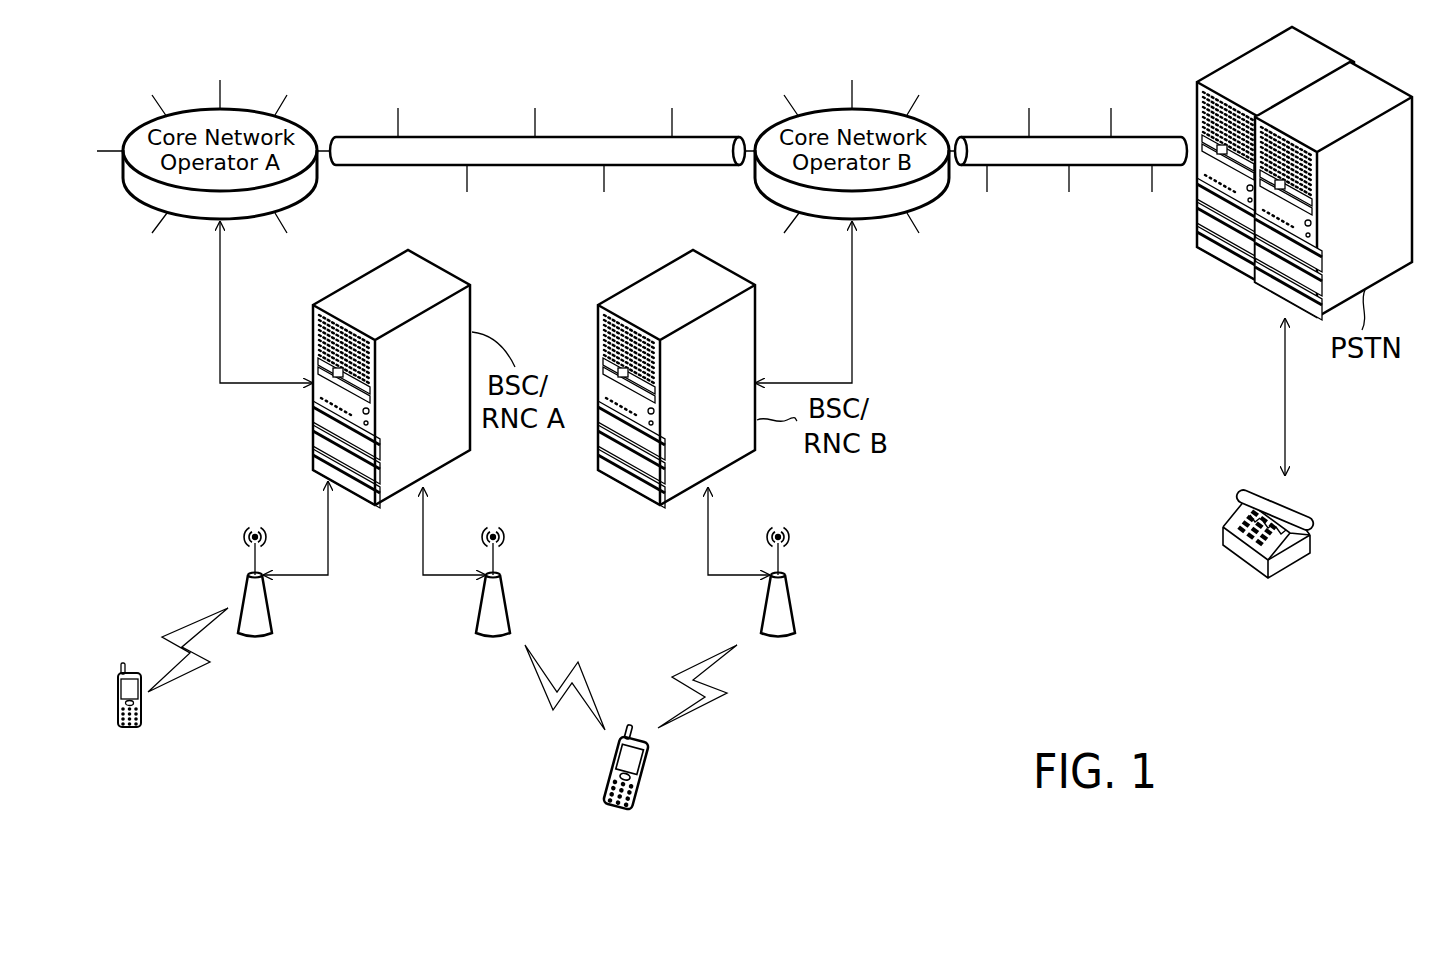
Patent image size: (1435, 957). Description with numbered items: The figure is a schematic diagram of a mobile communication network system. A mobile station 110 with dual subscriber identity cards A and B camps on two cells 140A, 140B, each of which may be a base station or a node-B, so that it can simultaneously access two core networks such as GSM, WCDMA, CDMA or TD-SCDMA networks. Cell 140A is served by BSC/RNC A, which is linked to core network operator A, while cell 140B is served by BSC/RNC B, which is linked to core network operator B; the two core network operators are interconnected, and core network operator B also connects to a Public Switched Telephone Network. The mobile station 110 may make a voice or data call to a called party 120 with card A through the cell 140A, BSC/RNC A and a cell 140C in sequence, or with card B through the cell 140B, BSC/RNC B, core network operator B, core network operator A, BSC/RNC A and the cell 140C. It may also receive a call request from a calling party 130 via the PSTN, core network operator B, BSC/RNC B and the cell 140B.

The mobile station 110 is at (648, 773).
The called party 120 is at (142, 714).
The called party 130 is at (1313, 540).
The cell 140A is at (510, 604).
The cell 140B is at (797, 604).
The cell 140C is at (273, 604).